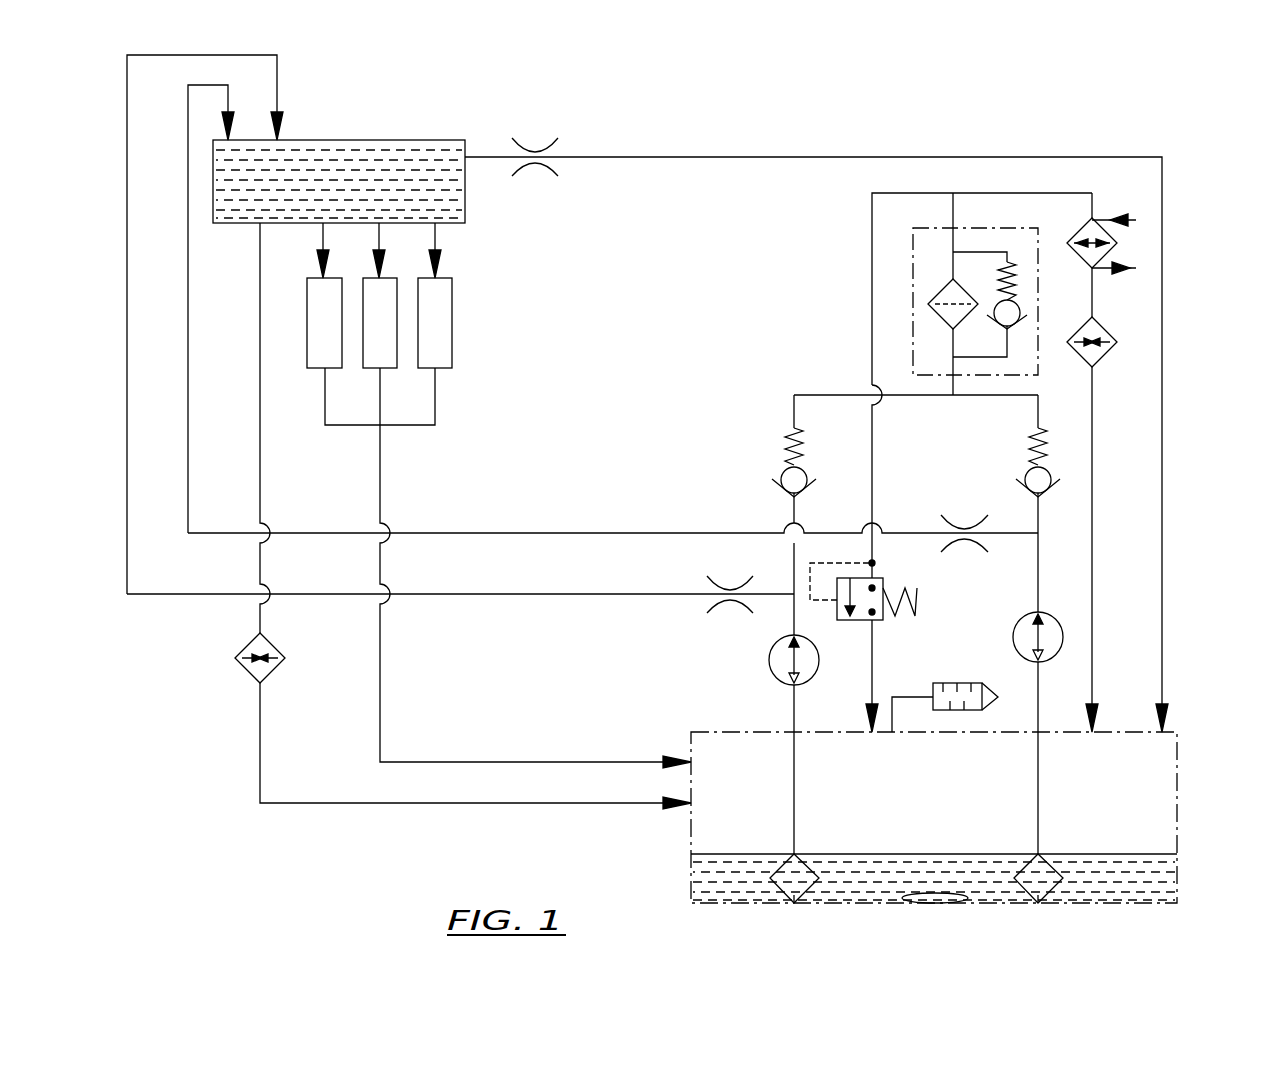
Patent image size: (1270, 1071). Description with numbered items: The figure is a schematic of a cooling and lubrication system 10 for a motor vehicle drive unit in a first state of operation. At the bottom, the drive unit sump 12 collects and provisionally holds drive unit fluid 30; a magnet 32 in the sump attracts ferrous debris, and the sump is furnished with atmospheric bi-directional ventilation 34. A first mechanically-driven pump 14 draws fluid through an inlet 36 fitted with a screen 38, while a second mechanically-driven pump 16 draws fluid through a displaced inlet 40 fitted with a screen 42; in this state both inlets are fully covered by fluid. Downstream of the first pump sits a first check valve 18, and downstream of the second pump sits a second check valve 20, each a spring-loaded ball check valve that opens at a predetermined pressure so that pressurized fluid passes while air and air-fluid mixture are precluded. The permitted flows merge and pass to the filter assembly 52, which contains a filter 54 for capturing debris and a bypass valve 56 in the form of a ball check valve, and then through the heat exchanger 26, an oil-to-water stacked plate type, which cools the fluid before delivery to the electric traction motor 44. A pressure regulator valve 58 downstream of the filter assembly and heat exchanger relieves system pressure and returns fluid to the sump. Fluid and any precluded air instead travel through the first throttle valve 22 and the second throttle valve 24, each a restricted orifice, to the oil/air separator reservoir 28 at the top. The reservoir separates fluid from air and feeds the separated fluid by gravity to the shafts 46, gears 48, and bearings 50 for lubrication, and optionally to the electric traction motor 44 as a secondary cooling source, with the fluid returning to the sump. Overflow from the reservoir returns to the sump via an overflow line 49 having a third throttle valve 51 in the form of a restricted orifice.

The cooling and lubrication system 10 is at (1138, 86).
The drive unit sump 12 is at (1178, 815).
The first mechanically-driven pump 14 is at (1013, 628).
The second mechanically-driven pump 16 is at (769, 665).
The first check valve 18 is at (1052, 470).
The second check valve 20 is at (781, 470).
The first throttle valve 22 is at (963, 530).
The second throttle valve 24 is at (727, 588).
The heat exchanger 26 is at (1117, 243).
The oil/air separator reservoir 28 is at (398, 140).
The drive unit fluid 30 is at (327, 158).
The magnet 32 is at (935, 905).
The atmospheric bi-directional ventilation 34 is at (950, 683).
The inlet 36 is at (1036, 896).
The screen 38 is at (1025, 865).
The inlet 40 is at (791, 896).
The screen 42 is at (805, 862).
The electric traction motor 44 is at (285, 658).
The shafts 46 is at (307, 337).
The gears 48 is at (372, 368).
The overflow line 49 is at (610, 157).
The bearings 50 is at (452, 328).
The third throttle valve 51 is at (532, 150).
The filter assembly 52 is at (913, 275).
The filter 54 is at (933, 318).
The bypass valve 56 is at (1021, 308).
The pressure regulator valve 58 is at (857, 620).